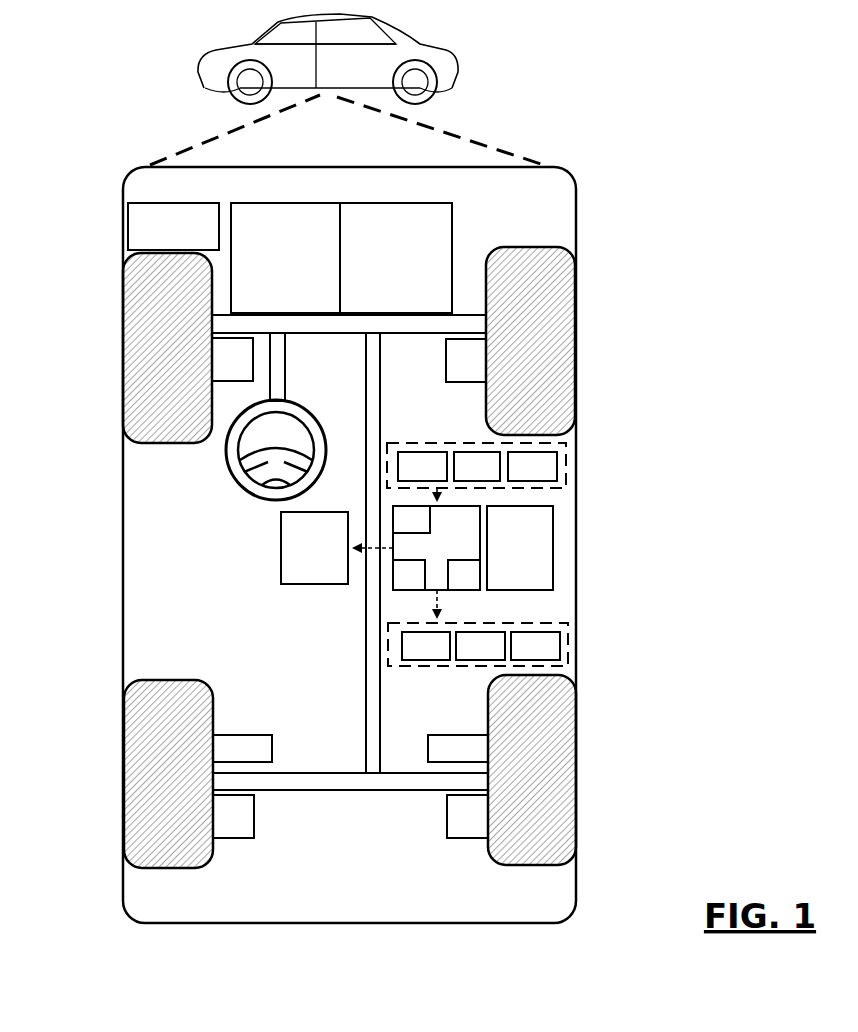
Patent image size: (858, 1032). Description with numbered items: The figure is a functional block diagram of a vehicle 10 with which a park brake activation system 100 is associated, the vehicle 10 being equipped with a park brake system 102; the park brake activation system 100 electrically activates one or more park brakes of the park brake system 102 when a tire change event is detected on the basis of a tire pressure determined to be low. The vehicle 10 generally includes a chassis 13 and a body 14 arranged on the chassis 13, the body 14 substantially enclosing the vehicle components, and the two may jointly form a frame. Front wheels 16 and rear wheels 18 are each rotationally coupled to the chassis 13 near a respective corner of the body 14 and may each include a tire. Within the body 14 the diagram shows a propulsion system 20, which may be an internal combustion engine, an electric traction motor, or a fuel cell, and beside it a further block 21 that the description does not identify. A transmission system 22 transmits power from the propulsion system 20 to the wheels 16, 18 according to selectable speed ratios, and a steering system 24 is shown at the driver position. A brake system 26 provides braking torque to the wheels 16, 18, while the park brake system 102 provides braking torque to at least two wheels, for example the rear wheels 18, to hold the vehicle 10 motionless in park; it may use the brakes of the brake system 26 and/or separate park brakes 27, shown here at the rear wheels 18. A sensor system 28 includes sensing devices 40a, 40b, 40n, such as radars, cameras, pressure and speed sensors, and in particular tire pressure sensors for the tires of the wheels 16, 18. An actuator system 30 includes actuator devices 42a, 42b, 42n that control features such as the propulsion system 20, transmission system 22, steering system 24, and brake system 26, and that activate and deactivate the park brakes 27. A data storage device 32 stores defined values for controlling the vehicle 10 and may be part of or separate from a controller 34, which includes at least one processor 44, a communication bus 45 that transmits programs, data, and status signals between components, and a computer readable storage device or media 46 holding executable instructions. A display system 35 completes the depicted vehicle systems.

The vehicle 10 is at (455, 66).
The chassis 13 is at (365, 708).
The body 14 is at (122, 527).
The front wheels 16 is at (178, 445).
The rear wheels 18 is at (185, 868).
The propulsion system 20 is at (285, 258).
The battery 21 is at (173, 226).
The transmission system 22 is at (396, 258).
The steering system 24 is at (306, 352).
The brake system 26 is at (350, 588).
The park brakes 27 is at (350, 748).
The sensor system 28 is at (400, 438).
The actuator system 30 is at (440, 680).
The data storage device 32 is at (520, 548).
The controller 34 is at (436, 548).
The display system 35 is at (314, 548).
The sensing device 40a is at (422, 466).
The sensing device 40b is at (477, 466).
The sensing device 40n is at (532, 466).
The actuator device 42a is at (426, 646).
The actuator device 42b is at (480, 646).
The actuator device 42n is at (535, 646).
The processor 44 is at (409, 575).
The communication bus 45 is at (411, 519).
The computer readable storage device or media 46 is at (464, 575).
The park brake activation system 100 is at (618, 490).
The park brake system 102 is at (601, 618).